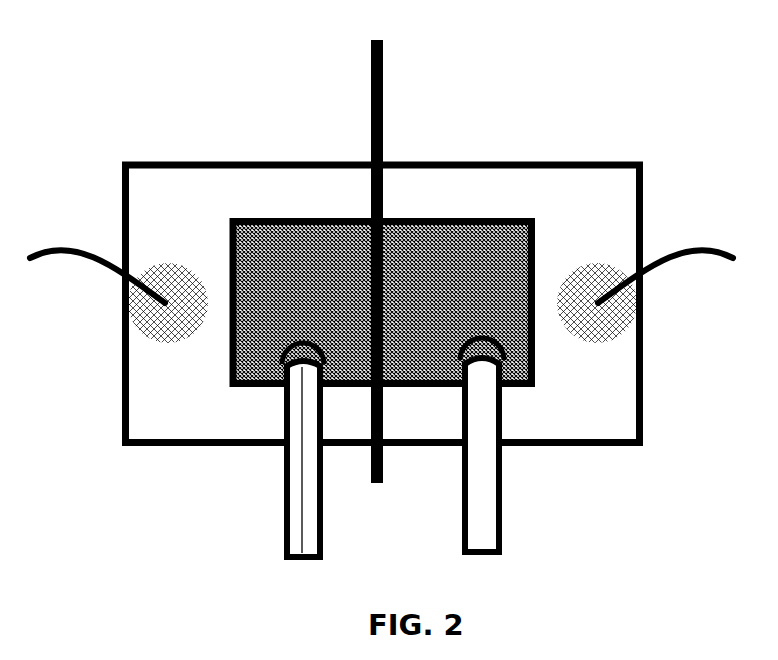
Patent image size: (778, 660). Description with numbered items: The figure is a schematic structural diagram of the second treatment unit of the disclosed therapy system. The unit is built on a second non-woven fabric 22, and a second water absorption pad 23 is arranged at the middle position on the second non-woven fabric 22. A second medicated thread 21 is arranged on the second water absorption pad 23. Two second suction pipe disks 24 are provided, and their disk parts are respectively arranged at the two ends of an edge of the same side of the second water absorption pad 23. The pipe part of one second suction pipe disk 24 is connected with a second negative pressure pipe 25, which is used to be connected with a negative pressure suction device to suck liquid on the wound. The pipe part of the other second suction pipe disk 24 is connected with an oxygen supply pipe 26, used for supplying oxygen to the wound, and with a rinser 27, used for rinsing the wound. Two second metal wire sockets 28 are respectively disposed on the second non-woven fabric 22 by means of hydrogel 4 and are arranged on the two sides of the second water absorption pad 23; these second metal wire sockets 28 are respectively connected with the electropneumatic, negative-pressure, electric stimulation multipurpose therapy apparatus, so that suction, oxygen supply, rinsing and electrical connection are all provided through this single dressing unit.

The second medicated thread 21 is at (383, 93).
The second non-woven fabric 22 is at (437, 182).
The second water absorption pad 23 is at (490, 258).
The second suction pipe disk 24 is at (293, 357).
The second negative pressure pipe 25 is at (485, 495).
The oxygen supply pipe 26 is at (310, 483).
The rinser 27 is at (295, 462).
The second metal wire socket 28 is at (57, 242).
The hydrogel 4 is at (167, 327).